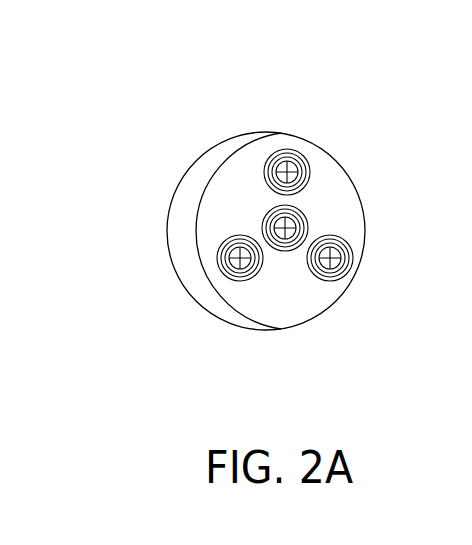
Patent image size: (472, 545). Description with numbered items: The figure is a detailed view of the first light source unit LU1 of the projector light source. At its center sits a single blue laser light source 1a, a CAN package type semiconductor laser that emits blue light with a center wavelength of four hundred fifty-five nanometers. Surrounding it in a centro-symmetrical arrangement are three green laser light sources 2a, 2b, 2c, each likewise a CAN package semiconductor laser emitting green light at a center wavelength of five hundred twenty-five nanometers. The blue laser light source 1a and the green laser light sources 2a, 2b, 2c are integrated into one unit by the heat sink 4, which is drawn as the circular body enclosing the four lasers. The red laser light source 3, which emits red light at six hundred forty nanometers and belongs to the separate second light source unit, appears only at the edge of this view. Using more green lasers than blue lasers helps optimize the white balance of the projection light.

The first light source unit LU1 is at (448, 41).
The blue laser light source 1a is at (266, 219).
The green laser light source 2a is at (339, 280).
The green laser light source 2b is at (228, 275).
The green laser light source 2c is at (286, 149).
The red laser light source 3 is at (466, 317).
The heat sink 4 is at (183, 187).